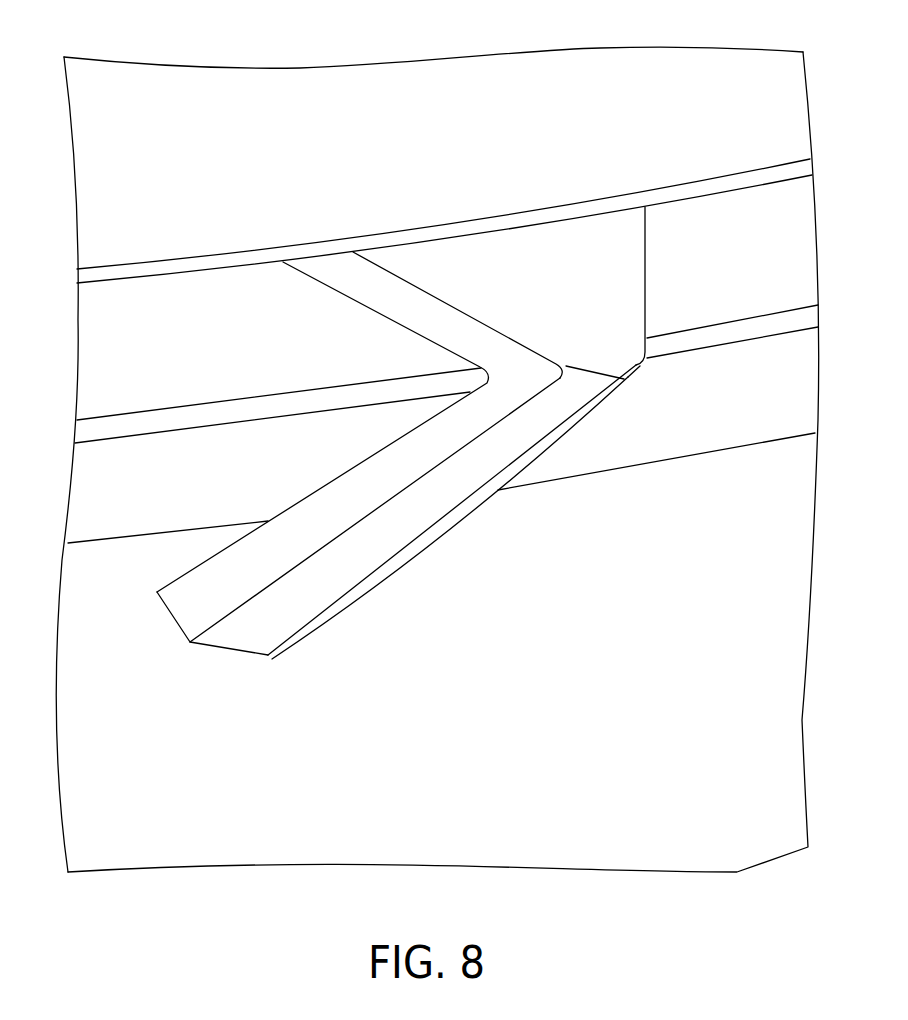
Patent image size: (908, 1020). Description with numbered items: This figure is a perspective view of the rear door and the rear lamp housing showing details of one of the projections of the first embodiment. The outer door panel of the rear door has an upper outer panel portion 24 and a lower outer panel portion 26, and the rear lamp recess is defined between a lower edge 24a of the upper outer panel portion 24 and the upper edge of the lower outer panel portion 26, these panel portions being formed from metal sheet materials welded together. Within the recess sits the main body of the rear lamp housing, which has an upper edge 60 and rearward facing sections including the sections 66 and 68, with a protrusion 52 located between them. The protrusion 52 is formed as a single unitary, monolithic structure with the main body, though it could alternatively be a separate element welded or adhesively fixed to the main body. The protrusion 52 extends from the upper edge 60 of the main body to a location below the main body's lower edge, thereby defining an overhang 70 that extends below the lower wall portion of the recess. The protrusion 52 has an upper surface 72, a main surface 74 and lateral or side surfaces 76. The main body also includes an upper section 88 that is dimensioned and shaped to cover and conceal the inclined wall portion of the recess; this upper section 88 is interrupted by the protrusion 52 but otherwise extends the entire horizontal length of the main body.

The upper outer panel portion 24 is at (427, 127).
The lower edge 24a is at (203, 257).
The lower outer panel portion 26 is at (582, 763).
The protrusion 52 is at (422, 444).
The upper edge 60 is at (714, 190).
The rearward facing section 66 is at (130, 477).
The rearward facing section 68 is at (762, 388).
The overhang 70 is at (407, 580).
The upper surface 72 is at (605, 285).
The main surface 74 is at (400, 522).
The side surface 76 is at (192, 603).
The upper section 88 is at (117, 342).